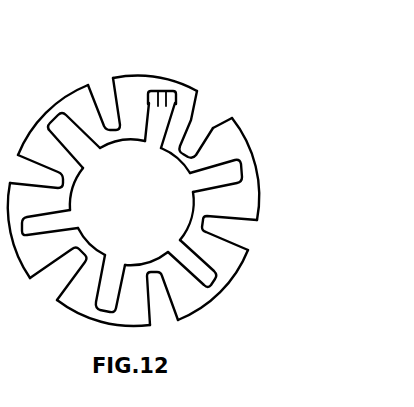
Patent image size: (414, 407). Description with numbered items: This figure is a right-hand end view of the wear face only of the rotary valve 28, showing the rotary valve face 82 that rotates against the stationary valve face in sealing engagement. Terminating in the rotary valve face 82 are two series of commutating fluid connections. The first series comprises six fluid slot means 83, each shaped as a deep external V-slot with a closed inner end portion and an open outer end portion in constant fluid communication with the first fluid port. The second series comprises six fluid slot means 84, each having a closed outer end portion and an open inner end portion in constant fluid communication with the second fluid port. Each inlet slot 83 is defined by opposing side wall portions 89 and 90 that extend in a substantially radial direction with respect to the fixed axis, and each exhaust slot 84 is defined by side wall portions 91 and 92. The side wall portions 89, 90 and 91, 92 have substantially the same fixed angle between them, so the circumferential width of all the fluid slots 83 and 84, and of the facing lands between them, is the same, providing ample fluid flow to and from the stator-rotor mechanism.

The rotary valve 28 is at (214, 294).
The rotary valve face 82 is at (86, 94).
The fluid slot means 83 is at (220, 117).
The fluid slot means 84 is at (166, 91).
The side wall portion 89 is at (216, 104).
The side wall portion 90 is at (222, 124).
The side wall portion 91 is at (158, 91).
The side wall portion 92 is at (175, 91).